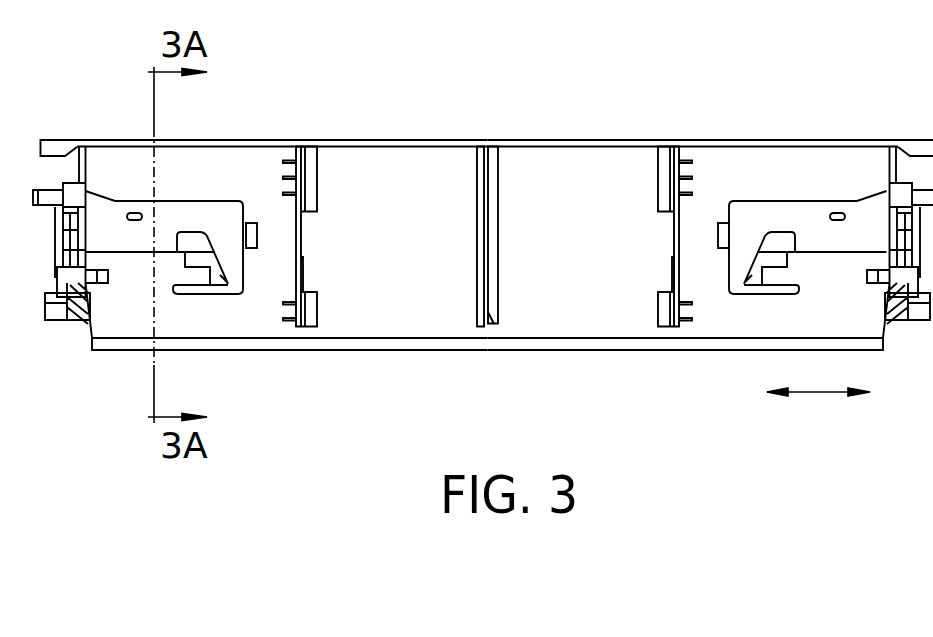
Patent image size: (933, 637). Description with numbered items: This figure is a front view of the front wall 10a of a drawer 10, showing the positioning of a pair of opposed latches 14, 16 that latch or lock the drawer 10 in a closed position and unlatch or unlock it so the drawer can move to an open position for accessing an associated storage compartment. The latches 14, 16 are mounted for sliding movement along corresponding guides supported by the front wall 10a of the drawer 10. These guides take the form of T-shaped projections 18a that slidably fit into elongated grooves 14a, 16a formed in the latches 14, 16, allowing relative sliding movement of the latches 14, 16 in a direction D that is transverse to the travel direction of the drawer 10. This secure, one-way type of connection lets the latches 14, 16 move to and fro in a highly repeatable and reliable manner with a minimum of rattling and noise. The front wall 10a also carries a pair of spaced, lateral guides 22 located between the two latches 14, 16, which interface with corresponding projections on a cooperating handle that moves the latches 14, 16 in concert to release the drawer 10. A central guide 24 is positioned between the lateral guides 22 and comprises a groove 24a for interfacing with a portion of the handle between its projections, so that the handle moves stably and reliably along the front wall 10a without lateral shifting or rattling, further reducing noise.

The drawer 10 is at (574, 110).
The front wall 10a is at (599, 242).
The latch 14 is at (212, 203).
The elongated groove 14a is at (246, 264).
The latch 16 is at (806, 205).
The elongated groove 16a is at (725, 268).
The T-shaped projection 18a is at (252, 223).
The lateral guide 22 is at (312, 313).
The central guide 24 is at (477, 128).
The groove 24a is at (493, 317).
The transverse direction D is at (823, 394).